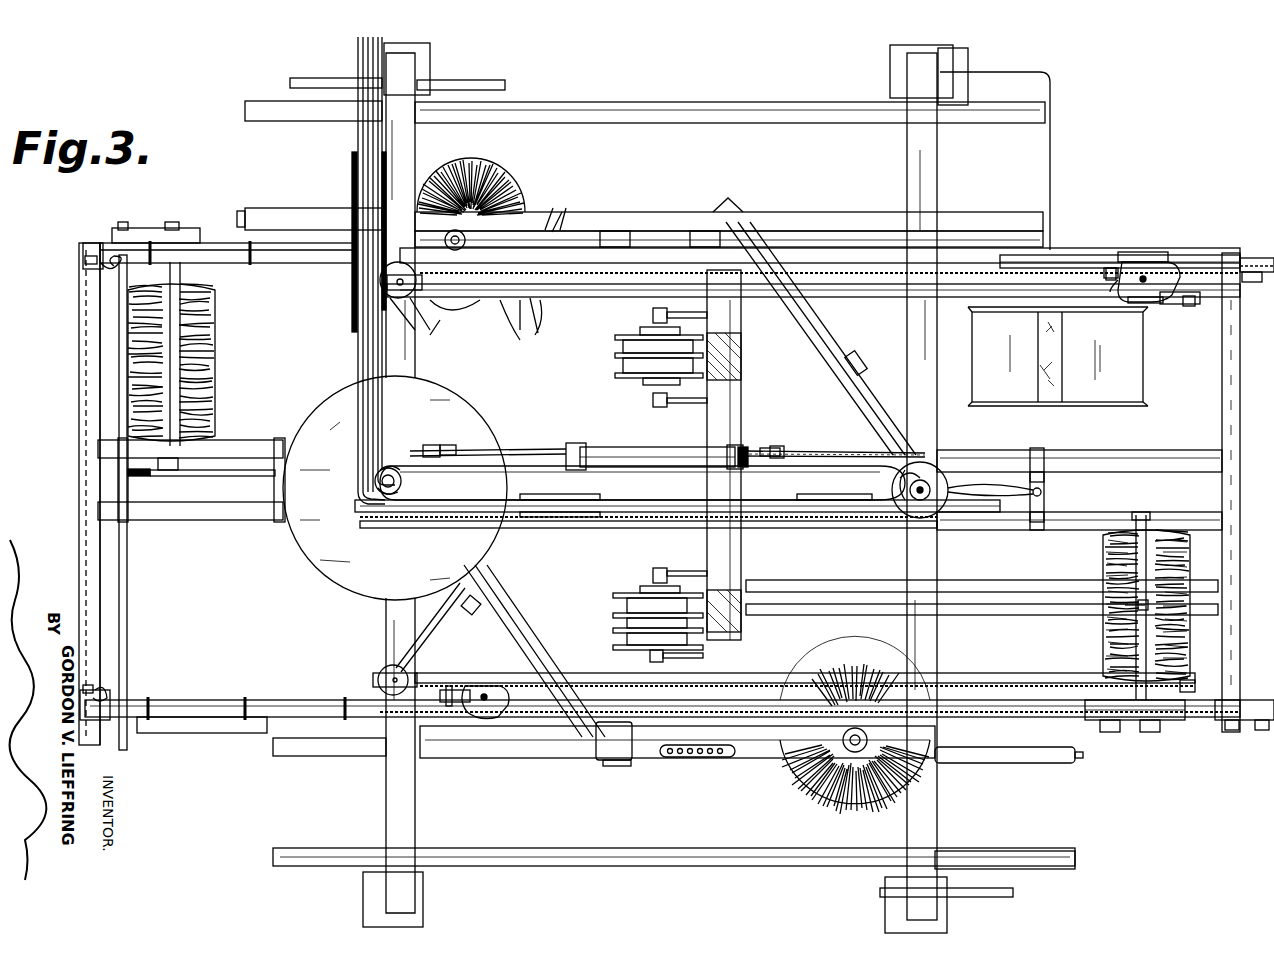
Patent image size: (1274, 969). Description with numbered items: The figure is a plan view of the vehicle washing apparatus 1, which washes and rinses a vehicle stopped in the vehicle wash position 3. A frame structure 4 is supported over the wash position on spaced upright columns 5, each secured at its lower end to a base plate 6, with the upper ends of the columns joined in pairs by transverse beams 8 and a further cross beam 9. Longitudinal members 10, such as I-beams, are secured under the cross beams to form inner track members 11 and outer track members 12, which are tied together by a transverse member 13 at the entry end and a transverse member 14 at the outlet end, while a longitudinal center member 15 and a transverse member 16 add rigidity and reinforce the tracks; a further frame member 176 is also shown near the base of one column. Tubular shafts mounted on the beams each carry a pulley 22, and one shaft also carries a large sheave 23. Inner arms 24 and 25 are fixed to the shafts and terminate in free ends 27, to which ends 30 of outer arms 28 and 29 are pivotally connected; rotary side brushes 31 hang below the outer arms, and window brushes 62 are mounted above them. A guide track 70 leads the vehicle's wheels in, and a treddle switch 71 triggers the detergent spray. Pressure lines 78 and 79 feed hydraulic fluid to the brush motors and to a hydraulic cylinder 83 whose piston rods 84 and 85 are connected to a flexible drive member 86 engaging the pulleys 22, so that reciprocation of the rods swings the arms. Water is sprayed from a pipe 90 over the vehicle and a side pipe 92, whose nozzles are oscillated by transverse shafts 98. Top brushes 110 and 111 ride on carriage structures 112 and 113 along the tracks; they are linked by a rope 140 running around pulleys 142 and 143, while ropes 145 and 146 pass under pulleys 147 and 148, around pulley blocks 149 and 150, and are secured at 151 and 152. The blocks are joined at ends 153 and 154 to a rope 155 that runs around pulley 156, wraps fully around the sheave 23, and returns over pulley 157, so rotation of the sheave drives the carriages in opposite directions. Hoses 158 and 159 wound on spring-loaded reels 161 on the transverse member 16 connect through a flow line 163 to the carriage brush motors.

The vehicle washing apparatus 1 is at (1136, 188).
The vehicle wash position 3 is at (643, 149).
The frame structure 4 is at (939, 805).
The upright columns 5 is at (678, 808).
The base plate 6 is at (944, 910).
The transverse beams 8 is at (412, 790).
The transverse beam 9 is at (934, 646).
The longitudinal members 10 is at (1196, 245).
The inner track members 11 is at (1162, 452).
The outer track members 12 is at (1102, 710).
The transverse member 13 is at (88, 499).
The transverse member 14 is at (1240, 592).
The longitudinal center member 15 is at (768, 494).
The transverse member 16 is at (740, 546).
The pulley 22 is at (388, 451).
The sheave 23 is at (328, 586).
The inner arm 24 is at (828, 368).
The inner arm 25 is at (514, 622).
The free ends 27 is at (594, 760).
The outer arm 28 is at (590, 230).
The outer arm 29 is at (748, 756).
The ends 30 is at (624, 758).
The rotary side brushes 31 is at (829, 810).
The window brushes 62 is at (805, 650).
The guide track 70 is at (1136, 372).
The treddle switch 71 is at (1045, 398).
The pressure line 78 is at (578, 444).
The pressure line 79 is at (742, 446).
The hydraulic cylinder 83 is at (628, 454).
The piston rod 84 is at (752, 454).
The piston rod 85 is at (534, 448).
The flexible drive member 86 is at (574, 516).
The pipe 90 is at (210, 474).
The side pipe 92 is at (275, 738).
The transverse shafts 98 is at (127, 595).
The top brush 110 is at (1178, 606).
The top brush 111 is at (214, 322).
The carriage structure 112 is at (1135, 552).
The carriage structure 113 is at (178, 262).
The rope 140 is at (66, 494).
The pulley 142 is at (83, 262).
The pulley 143 is at (80, 714).
The rope 145 is at (1016, 719).
The rope 146 is at (1095, 271).
The pulley 147 is at (1230, 718).
The pulley 148 is at (1256, 264).
The pulley block 149 is at (476, 714).
The pulley block 150 is at (1138, 262).
The secured end 151 is at (1208, 698).
The secured end 152 is at (1196, 300).
The end 153 is at (460, 686).
The end 154 is at (1112, 290).
The rope 155 is at (430, 612).
The pulley 156 is at (379, 678).
The pulley 157 is at (412, 304).
The hose 158 is at (786, 584).
The hose 159 is at (776, 623).
The reels 161 is at (613, 620).
The flow line 163 is at (100, 276).
The base bar 176 is at (1013, 890).